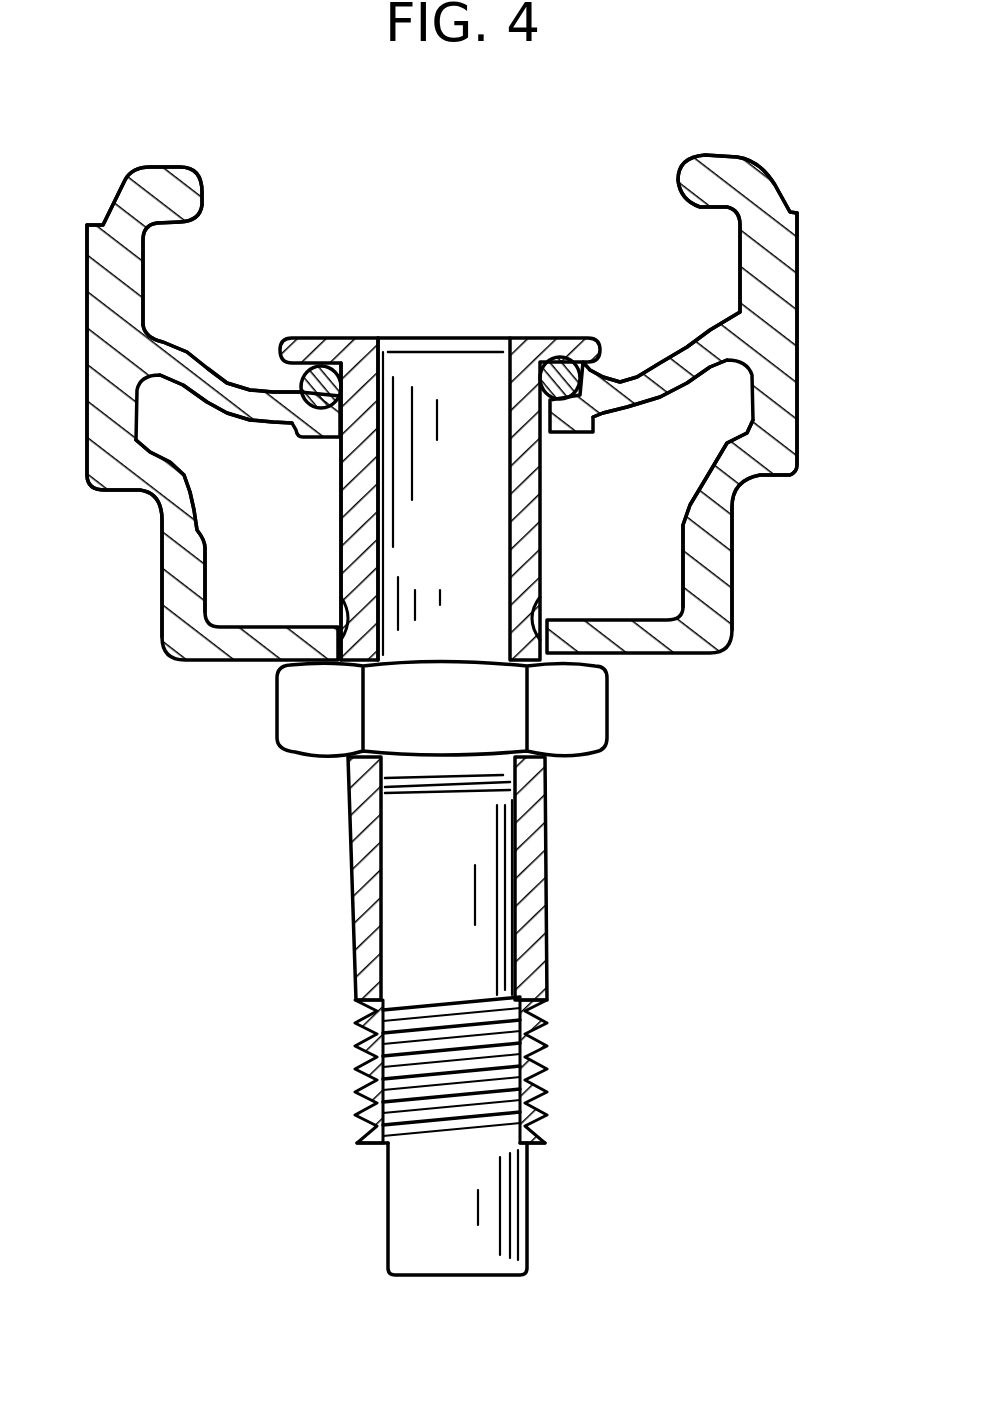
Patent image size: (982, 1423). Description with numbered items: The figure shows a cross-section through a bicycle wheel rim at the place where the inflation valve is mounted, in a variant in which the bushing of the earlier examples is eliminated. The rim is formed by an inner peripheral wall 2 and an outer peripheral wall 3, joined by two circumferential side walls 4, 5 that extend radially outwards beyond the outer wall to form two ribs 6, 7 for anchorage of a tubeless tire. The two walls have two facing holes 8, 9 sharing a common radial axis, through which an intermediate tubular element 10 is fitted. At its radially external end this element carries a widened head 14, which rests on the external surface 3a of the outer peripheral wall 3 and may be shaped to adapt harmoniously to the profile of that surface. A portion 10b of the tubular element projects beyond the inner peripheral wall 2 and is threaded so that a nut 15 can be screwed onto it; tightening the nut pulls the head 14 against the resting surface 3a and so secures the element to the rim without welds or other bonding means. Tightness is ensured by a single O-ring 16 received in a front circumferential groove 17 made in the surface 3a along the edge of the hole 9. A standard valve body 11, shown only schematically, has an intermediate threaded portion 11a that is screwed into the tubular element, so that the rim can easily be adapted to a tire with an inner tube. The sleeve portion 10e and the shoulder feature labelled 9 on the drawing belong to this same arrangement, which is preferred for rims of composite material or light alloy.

The inner peripheral wall 2 is at (645, 640).
The outer peripheral wall 3 is at (208, 395).
The external surface 3a is at (660, 365).
The circumferential side wall 4 is at (183, 573).
The circumferential side wall 5 is at (717, 537).
The rib 6 is at (103, 252).
The rib 7 is at (772, 254).
The hole 8 is at (535, 602).
The hole 9 is at (357, 490).
The intermediate tubular element 10 is at (435, 748).
The threaded portion 10b is at (530, 882).
The sleeve portion 10e is at (357, 563).
The valve body 11 is at (535, 1231).
The intermediate threaded portion 11a is at (427, 1100).
The widened head 14 is at (537, 345).
The nut 15 is at (307, 725).
The O-ring 16 is at (300, 380).
The front circumferential groove 17 is at (588, 372).